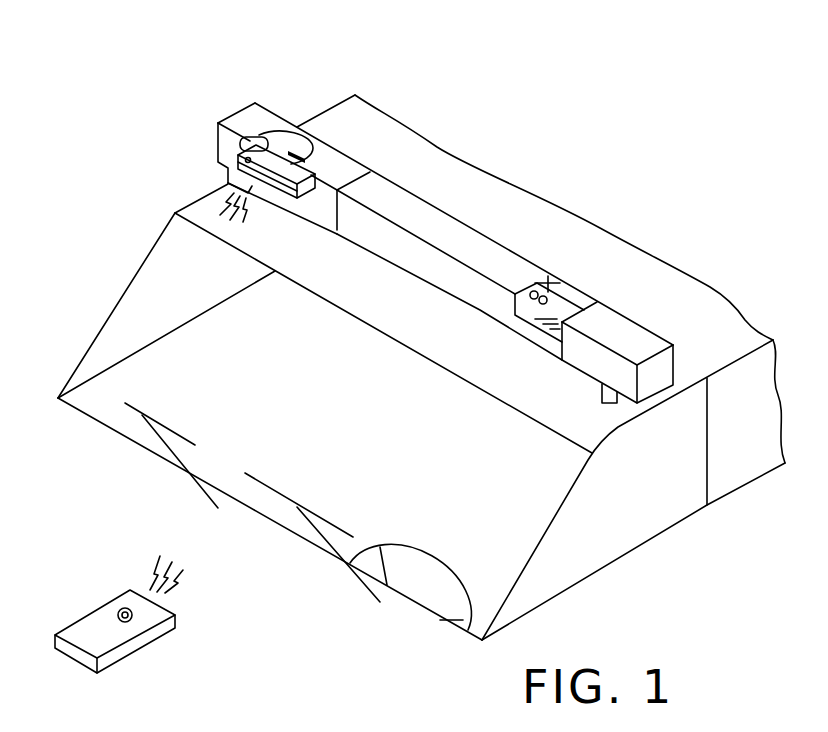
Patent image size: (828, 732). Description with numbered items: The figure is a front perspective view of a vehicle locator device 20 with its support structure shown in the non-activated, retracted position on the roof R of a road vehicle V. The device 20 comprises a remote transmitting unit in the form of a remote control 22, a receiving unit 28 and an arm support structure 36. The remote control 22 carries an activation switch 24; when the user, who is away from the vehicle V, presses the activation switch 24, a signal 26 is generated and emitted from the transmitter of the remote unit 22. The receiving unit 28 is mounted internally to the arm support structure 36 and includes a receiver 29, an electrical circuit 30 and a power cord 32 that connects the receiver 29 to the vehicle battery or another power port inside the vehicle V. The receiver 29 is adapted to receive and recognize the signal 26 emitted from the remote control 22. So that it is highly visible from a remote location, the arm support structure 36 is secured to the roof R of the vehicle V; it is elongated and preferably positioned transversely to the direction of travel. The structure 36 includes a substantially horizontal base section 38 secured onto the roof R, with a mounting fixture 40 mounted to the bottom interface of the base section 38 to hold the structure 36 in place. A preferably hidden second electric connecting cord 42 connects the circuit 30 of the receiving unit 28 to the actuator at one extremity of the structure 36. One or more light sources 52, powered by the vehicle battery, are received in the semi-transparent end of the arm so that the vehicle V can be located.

The vehicle locator device 20 is at (110, 139).
The remote control 22 is at (178, 655).
The activation switch 24 is at (125, 607).
The signal 26 is at (238, 194).
The receiving unit 28 is at (284, 104).
The receiver 29 is at (237, 163).
The electrical circuit 30 is at (288, 168).
The power cord 32 is at (246, 142).
The arm support structure 36 is at (413, 277).
The base section 38 is at (345, 163).
The mounting fixture 40 is at (600, 397).
The second electric connecting cord 42 is at (290, 152).
The light sources 52 is at (537, 282).
The roof R is at (664, 277).
The vehicle V is at (668, 527).